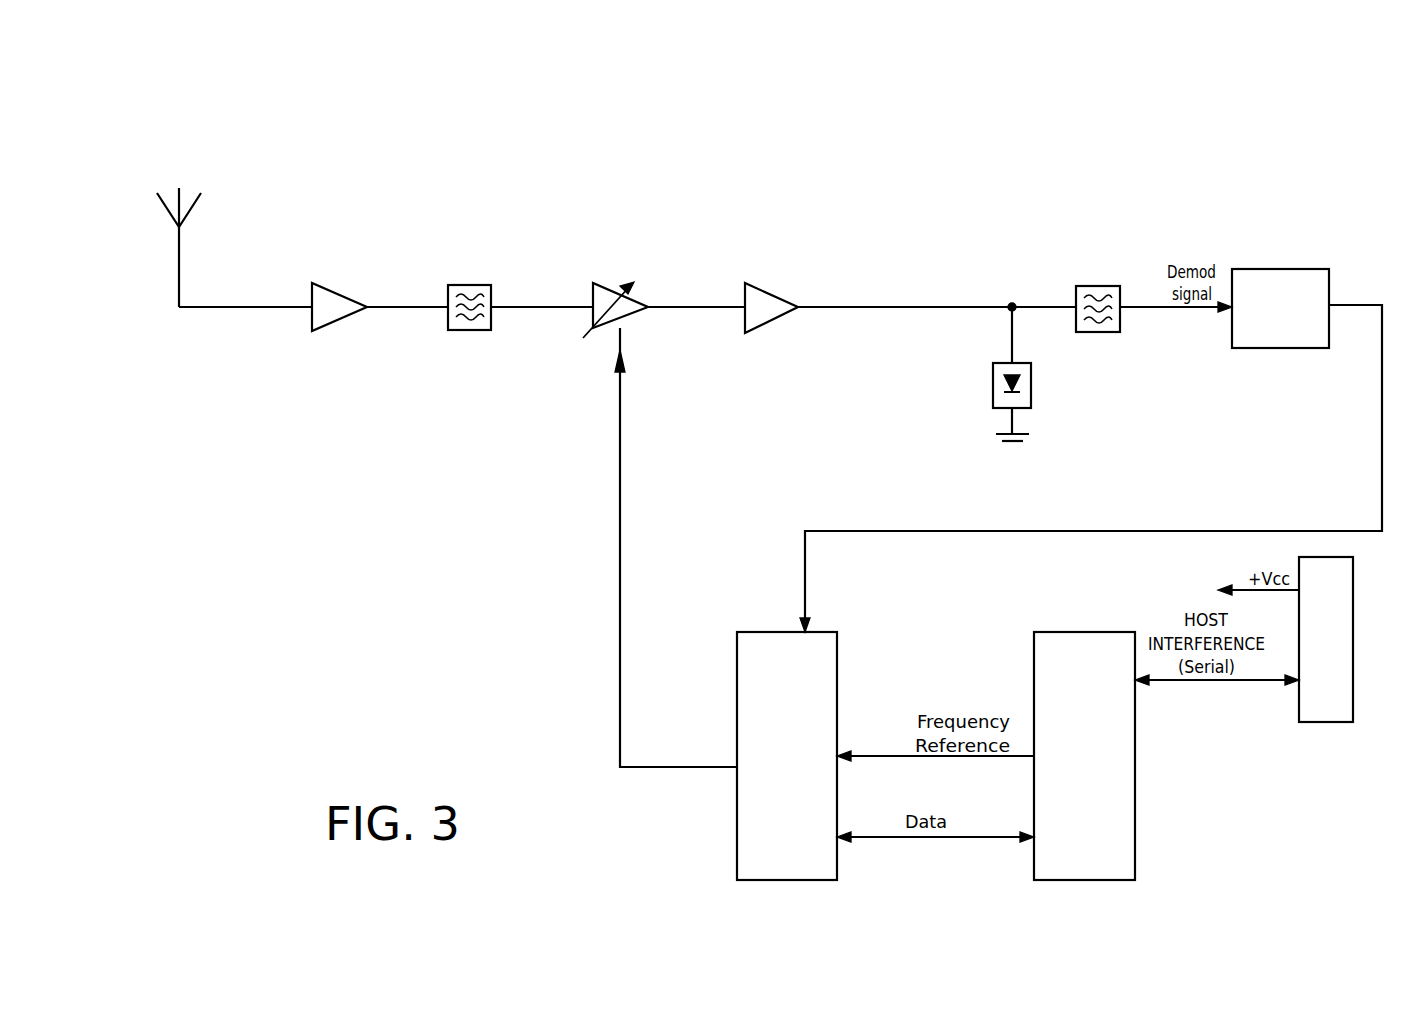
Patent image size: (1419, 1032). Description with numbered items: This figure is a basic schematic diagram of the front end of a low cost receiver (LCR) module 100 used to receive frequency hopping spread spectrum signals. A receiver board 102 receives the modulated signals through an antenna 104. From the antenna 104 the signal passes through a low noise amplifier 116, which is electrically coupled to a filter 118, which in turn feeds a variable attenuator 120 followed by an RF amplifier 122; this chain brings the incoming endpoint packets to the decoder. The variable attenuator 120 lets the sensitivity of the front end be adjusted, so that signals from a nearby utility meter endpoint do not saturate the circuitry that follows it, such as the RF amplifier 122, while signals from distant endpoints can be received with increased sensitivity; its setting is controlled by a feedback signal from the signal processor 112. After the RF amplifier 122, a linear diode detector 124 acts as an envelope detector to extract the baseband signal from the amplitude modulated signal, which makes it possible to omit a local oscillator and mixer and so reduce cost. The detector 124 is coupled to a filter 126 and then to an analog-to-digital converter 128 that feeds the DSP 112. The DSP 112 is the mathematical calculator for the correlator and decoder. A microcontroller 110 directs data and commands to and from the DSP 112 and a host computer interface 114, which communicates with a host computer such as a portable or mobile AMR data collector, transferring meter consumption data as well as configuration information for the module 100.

The LCR module 100 is at (199, 66).
The receiver board 102 is at (380, 648).
The antenna 104 is at (177, 255).
The microcontroller 110 is at (1130, 790).
The signal processor 112 is at (801, 839).
The host computer interface 114 is at (1353, 625).
The low noise amplifier 116 is at (318, 331).
The filter 118 is at (468, 330).
The variable attenuator 120 is at (611, 330).
The RF amplifier 122 is at (788, 300).
The linear detector 124 is at (1000, 360).
The filter 126 is at (1074, 300).
The analog-to-digital converter 128 is at (1331, 290).